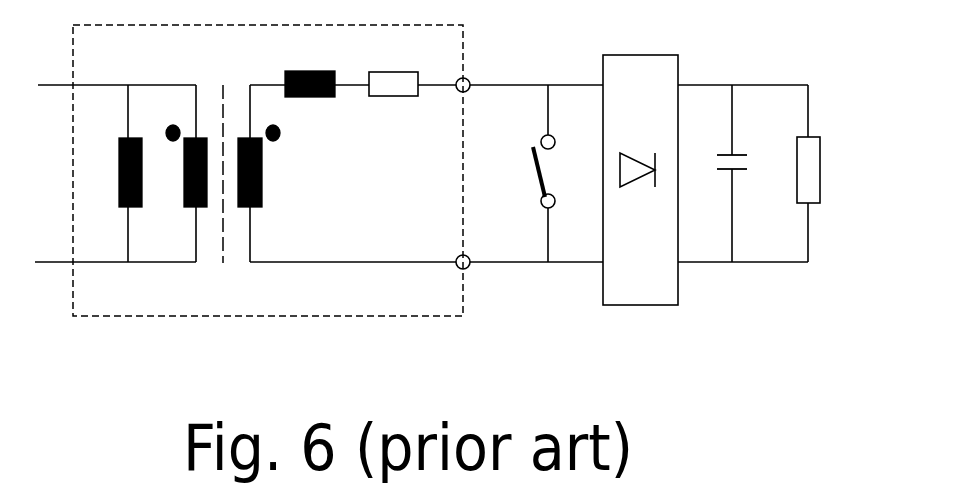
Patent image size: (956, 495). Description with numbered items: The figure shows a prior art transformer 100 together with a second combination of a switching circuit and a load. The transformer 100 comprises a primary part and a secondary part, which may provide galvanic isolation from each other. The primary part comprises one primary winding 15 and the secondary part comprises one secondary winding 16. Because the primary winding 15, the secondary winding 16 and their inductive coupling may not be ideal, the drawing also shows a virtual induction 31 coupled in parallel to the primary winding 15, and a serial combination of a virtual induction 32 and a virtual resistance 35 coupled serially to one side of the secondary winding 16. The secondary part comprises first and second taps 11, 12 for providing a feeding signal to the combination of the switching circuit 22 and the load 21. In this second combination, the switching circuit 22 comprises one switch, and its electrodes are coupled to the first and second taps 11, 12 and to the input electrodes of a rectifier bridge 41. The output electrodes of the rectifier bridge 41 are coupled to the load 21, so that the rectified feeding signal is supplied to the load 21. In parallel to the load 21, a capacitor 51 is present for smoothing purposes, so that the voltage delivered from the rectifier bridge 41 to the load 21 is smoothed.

The transformer 100 is at (424, 316).
The virtual induction 31 is at (115, 172).
The primary winding 15 is at (186, 183).
The secondary winding 16 is at (265, 168).
The virtual induction 32 is at (310, 69).
The virtual resistance 35 is at (393, 69).
The second tap 12 is at (469, 79).
The first tap 11 is at (468, 268).
The switching circuit 22 is at (546, 177).
The rectifier bridge 41 is at (640, 305).
The capacitor 51 is at (735, 174).
The load 21 is at (820, 168).